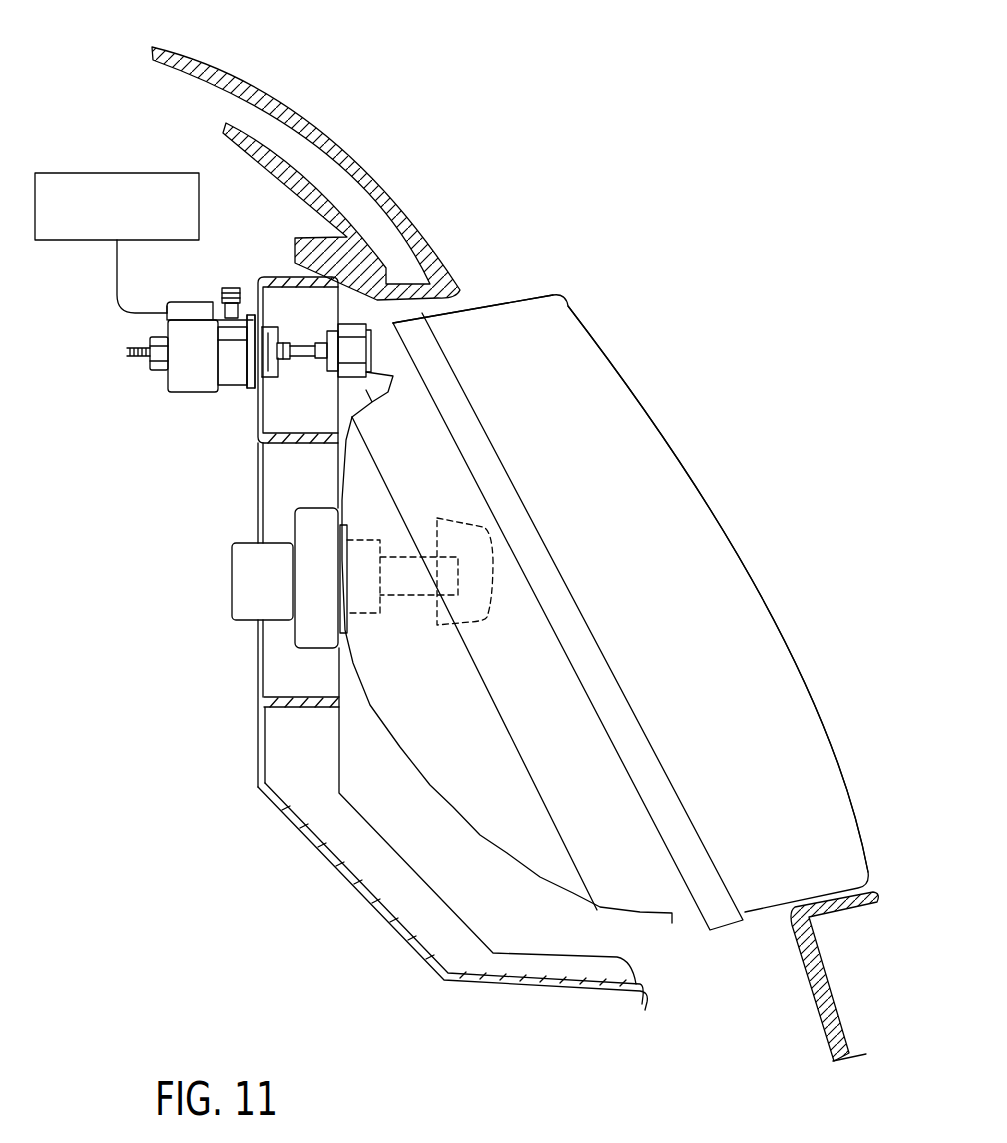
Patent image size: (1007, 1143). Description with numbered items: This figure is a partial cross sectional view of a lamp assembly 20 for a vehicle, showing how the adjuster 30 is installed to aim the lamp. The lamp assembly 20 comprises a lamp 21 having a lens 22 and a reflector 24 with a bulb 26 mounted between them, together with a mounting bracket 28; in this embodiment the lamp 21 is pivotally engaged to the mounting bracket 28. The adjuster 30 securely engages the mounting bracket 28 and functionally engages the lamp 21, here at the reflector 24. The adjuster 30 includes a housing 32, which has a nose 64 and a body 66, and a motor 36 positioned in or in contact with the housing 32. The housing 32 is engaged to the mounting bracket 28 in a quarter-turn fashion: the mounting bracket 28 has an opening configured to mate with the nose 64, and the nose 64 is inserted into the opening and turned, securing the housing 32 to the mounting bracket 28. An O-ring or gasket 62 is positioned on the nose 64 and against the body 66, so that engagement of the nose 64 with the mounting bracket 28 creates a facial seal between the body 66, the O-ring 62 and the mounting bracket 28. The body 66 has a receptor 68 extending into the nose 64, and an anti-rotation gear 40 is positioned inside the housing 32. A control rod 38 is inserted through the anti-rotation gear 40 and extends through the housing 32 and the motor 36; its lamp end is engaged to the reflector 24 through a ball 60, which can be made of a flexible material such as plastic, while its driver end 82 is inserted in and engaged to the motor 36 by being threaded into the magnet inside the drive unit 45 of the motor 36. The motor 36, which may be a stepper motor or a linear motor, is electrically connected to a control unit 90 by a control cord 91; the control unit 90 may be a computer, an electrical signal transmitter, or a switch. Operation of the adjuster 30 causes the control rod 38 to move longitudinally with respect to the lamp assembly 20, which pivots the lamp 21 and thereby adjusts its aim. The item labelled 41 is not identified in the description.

The lamp assembly 20 is at (703, 298).
The lamp 21 is at (668, 433).
The lens 22 is at (763, 617).
The reflector 24 is at (673, 917).
The bulb 26 is at (245, 590).
The mounting bracket 28 is at (263, 83).
The adjuster 30 is at (157, 357).
The housing 32 is at (237, 394).
The motor 36 is at (185, 396).
The control rod 38 is at (295, 346).
The anti-rotation gear 40 is at (285, 360).
The electrical terminal 41 is at (230, 282).
The drive unit 45 is at (197, 300).
The ball 60 is at (367, 350).
The O-ring or gasket 62 is at (249, 313).
The nose 64 is at (273, 373).
The body 66 is at (228, 382).
The receptor 68 is at (283, 340).
The driver end 82 is at (128, 342).
The control unit 90 is at (62, 173).
The control cord 91 is at (115, 272).